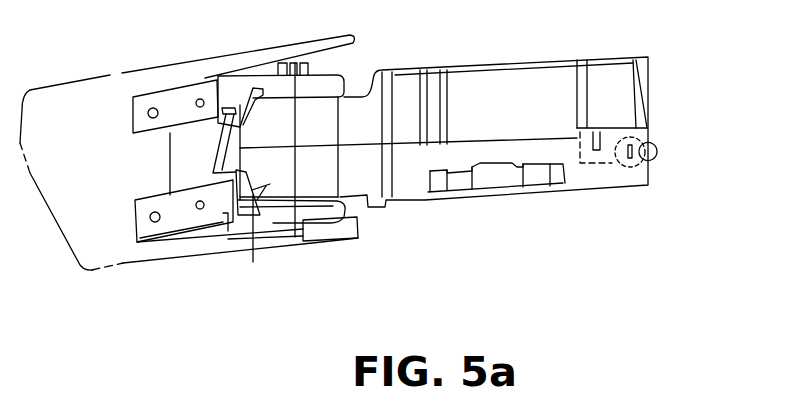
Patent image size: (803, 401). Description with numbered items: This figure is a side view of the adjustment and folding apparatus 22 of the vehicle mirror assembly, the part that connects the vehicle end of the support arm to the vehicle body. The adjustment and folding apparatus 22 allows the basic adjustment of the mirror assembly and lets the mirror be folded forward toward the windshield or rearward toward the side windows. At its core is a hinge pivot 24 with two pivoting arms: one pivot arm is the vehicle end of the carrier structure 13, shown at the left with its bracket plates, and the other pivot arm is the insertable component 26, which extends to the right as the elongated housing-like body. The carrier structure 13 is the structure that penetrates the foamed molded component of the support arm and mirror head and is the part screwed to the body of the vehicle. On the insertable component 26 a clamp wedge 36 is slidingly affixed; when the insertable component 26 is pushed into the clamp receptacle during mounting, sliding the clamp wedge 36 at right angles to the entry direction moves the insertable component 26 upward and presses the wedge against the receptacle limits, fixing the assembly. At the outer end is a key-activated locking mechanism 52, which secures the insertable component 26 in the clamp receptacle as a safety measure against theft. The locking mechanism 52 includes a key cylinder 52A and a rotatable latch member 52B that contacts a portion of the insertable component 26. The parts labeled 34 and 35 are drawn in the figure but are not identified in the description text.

The carrier structure 13 is at (169, 160).
The adjustment and folding apparatus 22 is at (277, 260).
The hinge pivot 24 is at (253, 261).
The insertable component 26 is at (525, 75).
The lever arm 34 is at (307, 63).
The latch rail 35 is at (306, 228).
The clamp wedge 36 is at (494, 184).
The key-activated locking mechanism 52 is at (652, 150).
The key cylinder 52A is at (647, 142).
The rotatable latch member 52B is at (590, 165).